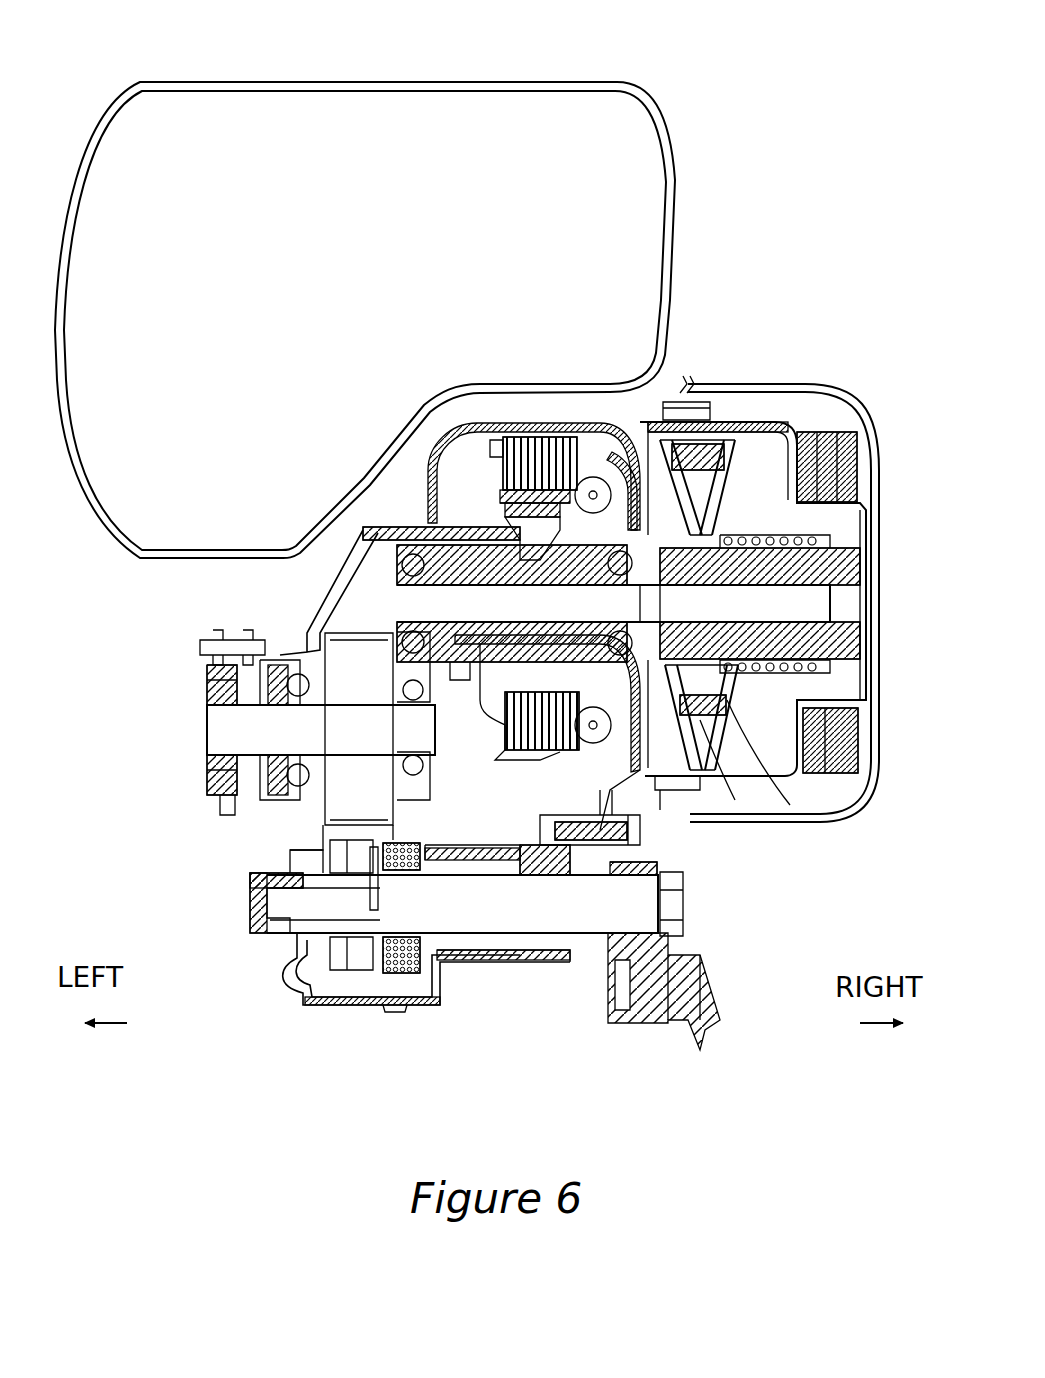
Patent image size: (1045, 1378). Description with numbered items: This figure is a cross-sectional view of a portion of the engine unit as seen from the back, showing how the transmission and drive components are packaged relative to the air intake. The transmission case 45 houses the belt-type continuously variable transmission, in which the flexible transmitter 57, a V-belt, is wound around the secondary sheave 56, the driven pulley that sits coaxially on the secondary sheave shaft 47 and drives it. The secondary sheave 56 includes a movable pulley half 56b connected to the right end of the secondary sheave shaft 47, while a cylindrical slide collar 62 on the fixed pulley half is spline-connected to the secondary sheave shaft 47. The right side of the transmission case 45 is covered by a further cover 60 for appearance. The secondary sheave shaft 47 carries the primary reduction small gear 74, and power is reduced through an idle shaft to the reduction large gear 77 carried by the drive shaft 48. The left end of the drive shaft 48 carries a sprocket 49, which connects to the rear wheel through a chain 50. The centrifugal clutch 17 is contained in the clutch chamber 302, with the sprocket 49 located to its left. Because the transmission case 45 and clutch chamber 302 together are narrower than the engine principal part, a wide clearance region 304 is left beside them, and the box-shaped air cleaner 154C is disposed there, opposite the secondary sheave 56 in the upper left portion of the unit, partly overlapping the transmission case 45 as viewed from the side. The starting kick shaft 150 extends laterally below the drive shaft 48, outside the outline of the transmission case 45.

The air cleaner 154C is at (425, 82).
The clearance region 304 is at (400, 502).
The centrifugal clutch 17 is at (490, 700).
The primary reduction small gear 74 is at (462, 660).
The secondary sheave shaft 47 is at (808, 600).
The slide collar 62 is at (745, 532).
The secondary sheave 56 is at (760, 702).
The transmission case 45 is at (868, 578).
The cover 60 is at (855, 800).
The movable pulley half 56b is at (790, 805).
The flexible transmitter 57 is at (735, 800).
The clutch chamber 302 is at (640, 822).
The drive shaft 48 is at (213, 725).
The reduction large gear 77 is at (325, 822).
The chain 50 is at (200, 646).
The sprocket 49 is at (220, 793).
The starting kick shaft 150 is at (582, 922).